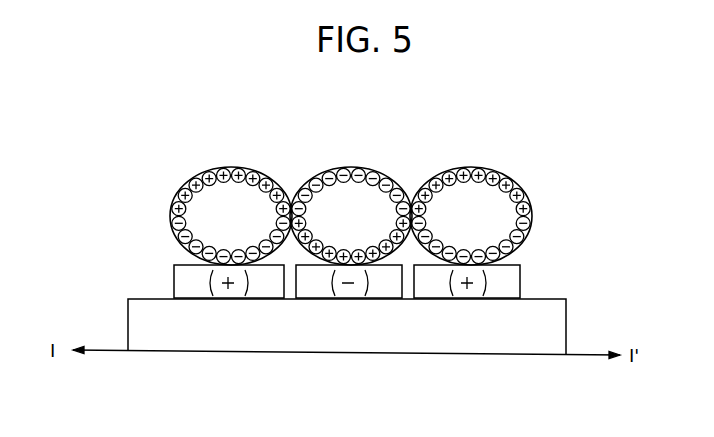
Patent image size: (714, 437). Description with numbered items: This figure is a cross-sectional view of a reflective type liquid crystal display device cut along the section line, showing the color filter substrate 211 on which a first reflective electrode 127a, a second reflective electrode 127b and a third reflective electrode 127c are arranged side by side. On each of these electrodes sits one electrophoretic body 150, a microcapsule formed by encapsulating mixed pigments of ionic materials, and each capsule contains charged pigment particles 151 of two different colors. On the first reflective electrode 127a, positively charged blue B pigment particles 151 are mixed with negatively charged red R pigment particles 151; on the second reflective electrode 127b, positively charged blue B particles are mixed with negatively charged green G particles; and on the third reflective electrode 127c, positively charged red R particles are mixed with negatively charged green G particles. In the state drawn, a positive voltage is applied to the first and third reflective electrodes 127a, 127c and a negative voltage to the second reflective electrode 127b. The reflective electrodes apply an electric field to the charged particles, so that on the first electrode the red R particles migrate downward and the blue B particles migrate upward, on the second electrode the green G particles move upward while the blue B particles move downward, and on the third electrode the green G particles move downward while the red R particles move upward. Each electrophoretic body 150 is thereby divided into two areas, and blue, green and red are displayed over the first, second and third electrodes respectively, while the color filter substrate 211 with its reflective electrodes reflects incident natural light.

The electrophoretic body 150 is at (528, 217).
The pigment particles 151 is at (528, 221).
The first reflective electrode 127a is at (178, 281).
The second reflective electrode 127b is at (386, 293).
The third reflective electrode 127c is at (507, 293).
The color filter substrate 211 is at (558, 327).
The red pigment R is at (498, 183).
The green pigment G is at (387, 182).
The blue pigment B is at (260, 182).